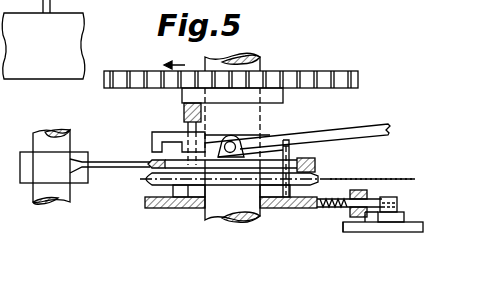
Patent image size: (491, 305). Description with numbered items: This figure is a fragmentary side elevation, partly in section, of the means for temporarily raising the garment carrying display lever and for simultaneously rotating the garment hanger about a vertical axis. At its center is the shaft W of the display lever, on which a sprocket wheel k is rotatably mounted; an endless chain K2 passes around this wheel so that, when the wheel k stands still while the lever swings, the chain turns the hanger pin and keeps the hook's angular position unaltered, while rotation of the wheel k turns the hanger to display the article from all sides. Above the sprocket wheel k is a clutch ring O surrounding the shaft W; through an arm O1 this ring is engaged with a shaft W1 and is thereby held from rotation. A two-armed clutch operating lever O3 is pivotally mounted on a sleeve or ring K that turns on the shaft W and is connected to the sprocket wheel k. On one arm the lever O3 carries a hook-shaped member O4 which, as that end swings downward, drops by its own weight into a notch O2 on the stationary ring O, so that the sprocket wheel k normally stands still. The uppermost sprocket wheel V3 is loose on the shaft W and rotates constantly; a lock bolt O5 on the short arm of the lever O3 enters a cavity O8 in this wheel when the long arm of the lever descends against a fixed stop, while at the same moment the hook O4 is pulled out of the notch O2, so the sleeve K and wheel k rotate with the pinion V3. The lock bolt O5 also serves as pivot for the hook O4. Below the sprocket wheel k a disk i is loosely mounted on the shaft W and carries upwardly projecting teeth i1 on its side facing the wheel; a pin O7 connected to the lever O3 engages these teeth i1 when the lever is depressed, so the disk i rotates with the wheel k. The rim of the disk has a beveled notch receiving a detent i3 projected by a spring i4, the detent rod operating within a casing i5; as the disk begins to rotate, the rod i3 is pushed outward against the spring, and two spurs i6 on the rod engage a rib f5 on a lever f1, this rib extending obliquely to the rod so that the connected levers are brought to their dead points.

The uppermost sprocket wheel V3 is at (286, 73).
The shaft W is at (248, 122).
The shaft W1 is at (57, 135).
The sleeve or ring K is at (192, 163).
The endless chain K2 is at (388, 177).
The clutch ring O is at (316, 162).
The arm O1 is at (110, 168).
The notch O2 is at (152, 162).
The two-armed clutch operating lever O3 is at (347, 133).
The hook-shaped member O4 is at (153, 133).
The lock bolt O5 is at (188, 128).
The pin O7 is at (287, 142).
The cavity O8 is at (265, 115).
The sprocket wheel k is at (150, 183).
The disk i is at (147, 208).
The teeth i1 is at (283, 200).
The detent i3 is at (325, 207).
The spring i4 is at (350, 196).
The casing i5 is at (349, 219).
The spurs i6 is at (398, 208).
The lever f1 is at (372, 232).
The rib f5 is at (400, 224).